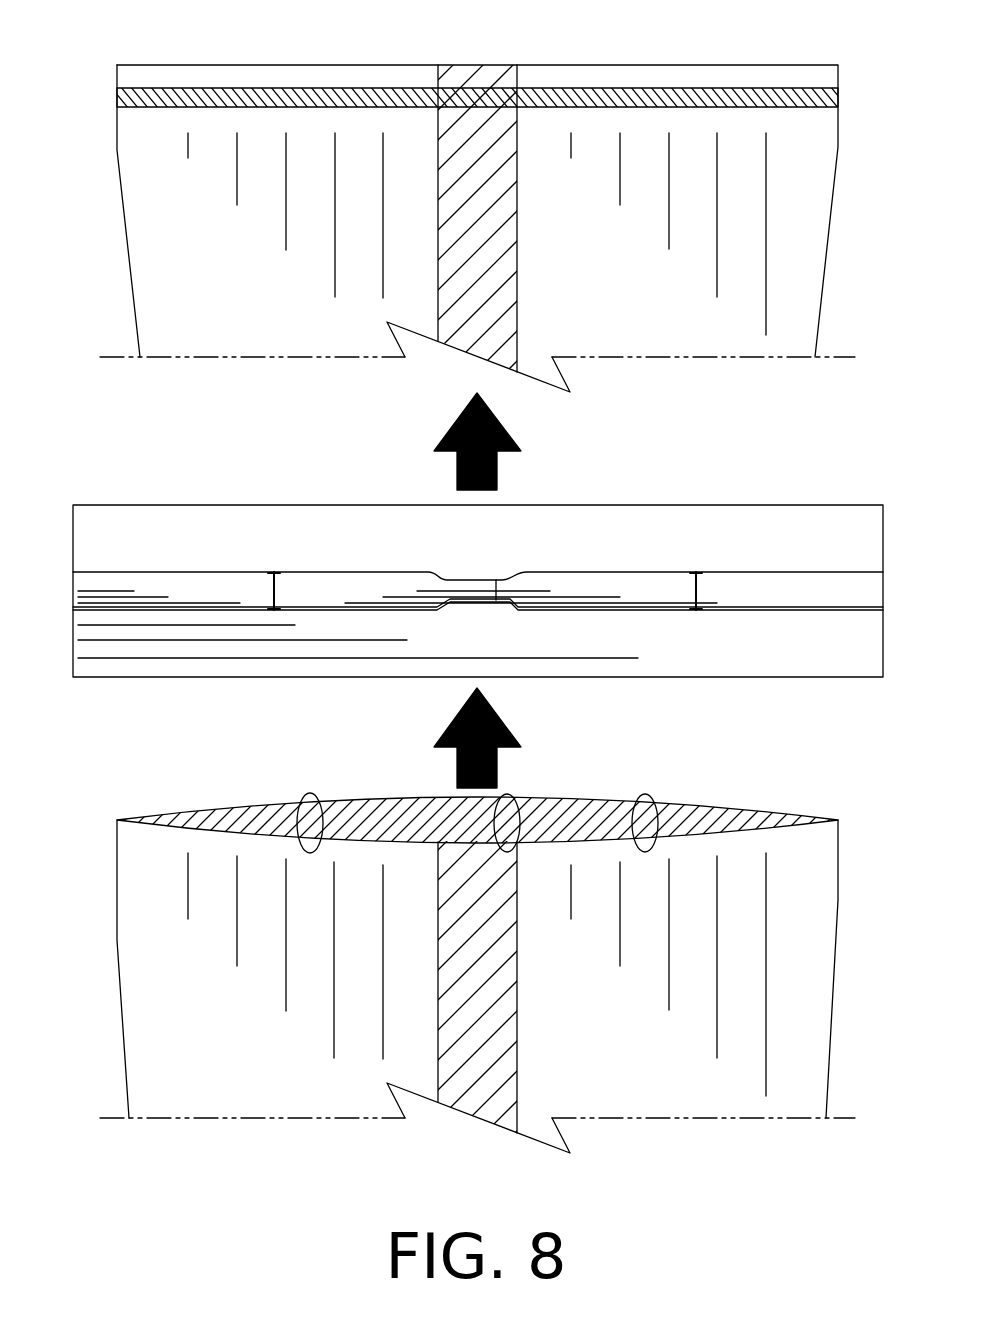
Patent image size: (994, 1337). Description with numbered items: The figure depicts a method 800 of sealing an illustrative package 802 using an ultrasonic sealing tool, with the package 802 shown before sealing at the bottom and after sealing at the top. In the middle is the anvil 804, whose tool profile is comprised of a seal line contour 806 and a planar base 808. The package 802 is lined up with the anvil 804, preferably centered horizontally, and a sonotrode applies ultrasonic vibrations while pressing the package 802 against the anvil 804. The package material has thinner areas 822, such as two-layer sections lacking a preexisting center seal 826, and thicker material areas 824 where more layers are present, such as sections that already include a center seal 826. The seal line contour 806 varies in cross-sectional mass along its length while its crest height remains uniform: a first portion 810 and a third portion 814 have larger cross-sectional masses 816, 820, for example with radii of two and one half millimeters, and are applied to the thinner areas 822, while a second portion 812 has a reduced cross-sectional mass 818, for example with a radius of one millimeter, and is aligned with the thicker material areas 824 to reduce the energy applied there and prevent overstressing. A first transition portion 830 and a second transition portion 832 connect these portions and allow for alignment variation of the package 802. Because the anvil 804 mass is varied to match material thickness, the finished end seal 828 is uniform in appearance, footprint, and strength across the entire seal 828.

The method 800 is at (158, 48).
The package 802 is at (823, 275).
The anvil 804 is at (829, 503).
The seal line contour 806 is at (873, 592).
The planar base 808 is at (123, 536).
The first portion 810 is at (255, 587).
The second portion 812 is at (475, 586).
The third portion 814 is at (675, 586).
The cross-sectional mass 816 is at (276, 590).
The cross-sectional mass 818 is at (500, 590).
The cross-sectional mass 820 is at (698, 590).
The thinner areas 822 is at (306, 797).
The thicker material areas 824 is at (515, 795).
The center seal 826 is at (512, 247).
The end seal 828 is at (118, 97).
The first transition portion 830 is at (439, 612).
The second transition portion 832 is at (512, 612).